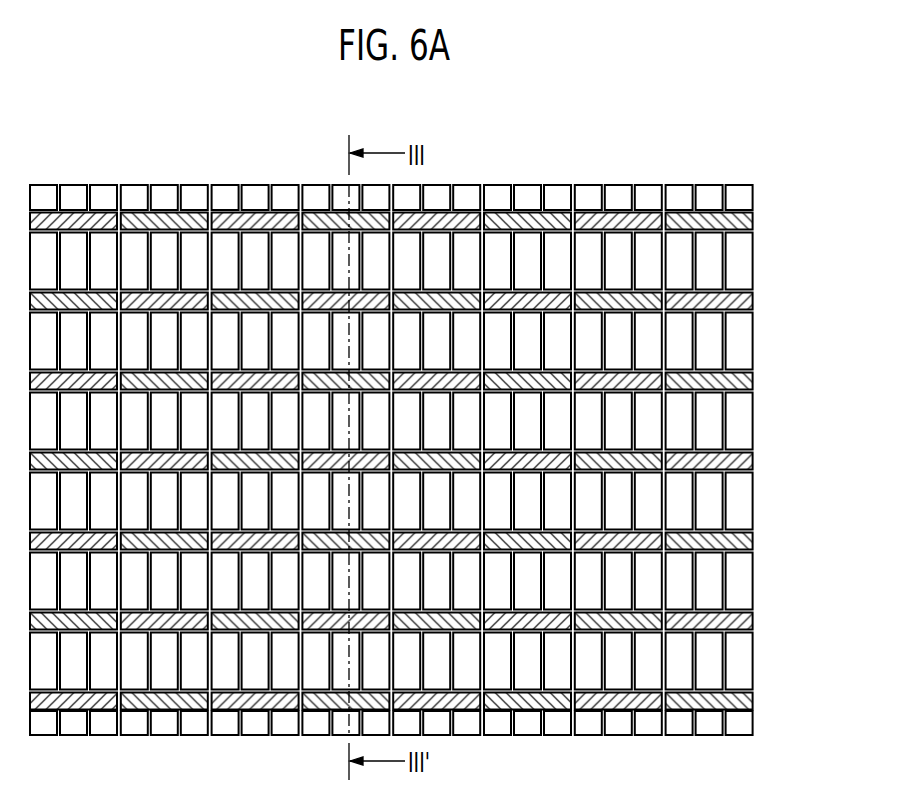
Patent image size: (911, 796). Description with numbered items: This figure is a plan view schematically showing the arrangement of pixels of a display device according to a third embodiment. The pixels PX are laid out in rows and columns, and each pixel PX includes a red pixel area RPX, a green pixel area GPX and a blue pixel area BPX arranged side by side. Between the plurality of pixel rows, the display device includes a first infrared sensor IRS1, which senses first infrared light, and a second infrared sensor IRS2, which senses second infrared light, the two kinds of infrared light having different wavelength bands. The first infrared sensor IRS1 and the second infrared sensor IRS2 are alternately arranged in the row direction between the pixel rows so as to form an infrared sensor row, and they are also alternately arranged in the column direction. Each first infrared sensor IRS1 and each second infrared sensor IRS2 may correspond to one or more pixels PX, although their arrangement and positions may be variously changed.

The pixel PX is at (770, 118).
The red pixel area RPX is at (676, 243).
The green pixel area GPX is at (706, 243).
The blue pixel area BPX is at (738, 243).
The first infrared sensor IRS1 is at (748, 300).
The second infrared sensor IRS2 is at (746, 383).